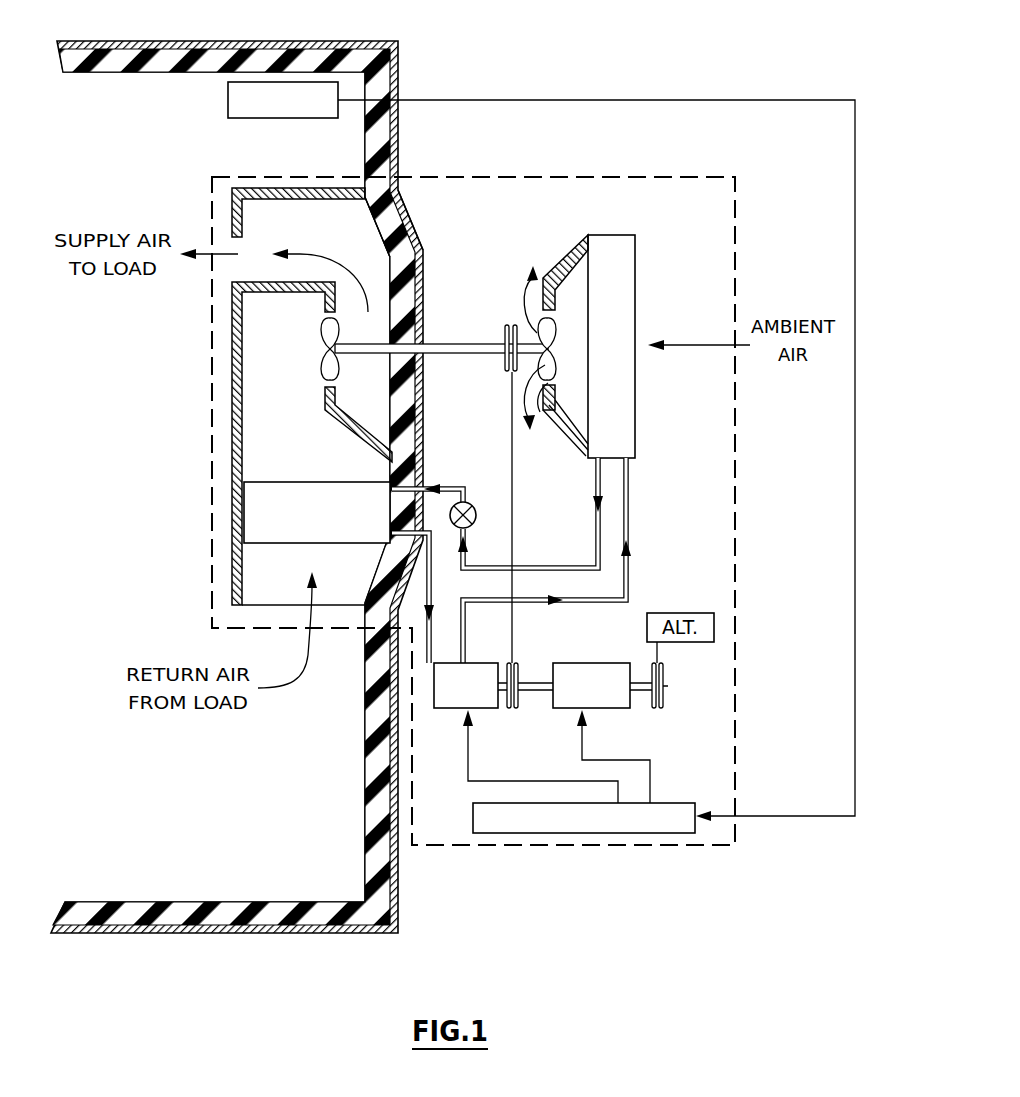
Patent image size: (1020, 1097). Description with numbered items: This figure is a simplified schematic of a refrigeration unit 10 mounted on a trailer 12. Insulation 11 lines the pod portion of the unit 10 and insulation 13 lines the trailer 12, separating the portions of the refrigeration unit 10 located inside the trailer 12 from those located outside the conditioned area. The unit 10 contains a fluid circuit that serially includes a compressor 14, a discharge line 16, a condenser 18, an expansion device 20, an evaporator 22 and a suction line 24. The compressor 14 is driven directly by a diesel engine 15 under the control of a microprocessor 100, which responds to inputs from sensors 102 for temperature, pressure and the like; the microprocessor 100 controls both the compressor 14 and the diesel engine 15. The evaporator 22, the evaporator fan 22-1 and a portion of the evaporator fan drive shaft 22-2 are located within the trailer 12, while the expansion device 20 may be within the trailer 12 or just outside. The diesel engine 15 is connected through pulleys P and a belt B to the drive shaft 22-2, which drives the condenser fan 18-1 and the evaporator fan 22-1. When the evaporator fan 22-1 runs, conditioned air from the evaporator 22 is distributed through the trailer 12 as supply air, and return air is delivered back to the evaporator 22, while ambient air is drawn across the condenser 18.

The refrigeration unit 10 is at (738, 232).
The insulation 11 is at (413, 233).
The trailer 12 is at (237, 467).
The insulation 13 is at (186, 58).
The compressor 14 is at (455, 712).
The diesel engine 15 is at (610, 712).
The discharge line 16 is at (536, 600).
The condenser 18 is at (636, 437).
The condenser fan 18-1 is at (580, 456).
The expansion device 20 is at (470, 502).
The evaporator 22 is at (338, 482).
The evaporator fan 22-1 is at (323, 342).
The evaporator fan drive shaft 22-2 is at (452, 343).
The suction line 24 is at (432, 568).
The microprocessor 100 is at (622, 835).
The sensors 102 is at (228, 104).
The belt B is at (513, 525).
The pulley P is at (505, 360).